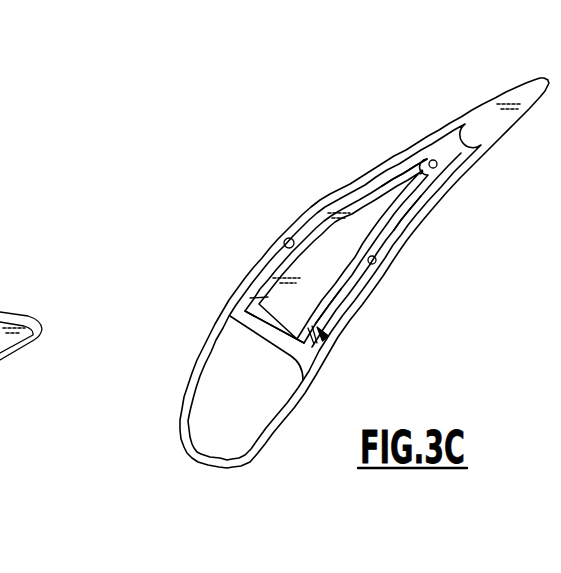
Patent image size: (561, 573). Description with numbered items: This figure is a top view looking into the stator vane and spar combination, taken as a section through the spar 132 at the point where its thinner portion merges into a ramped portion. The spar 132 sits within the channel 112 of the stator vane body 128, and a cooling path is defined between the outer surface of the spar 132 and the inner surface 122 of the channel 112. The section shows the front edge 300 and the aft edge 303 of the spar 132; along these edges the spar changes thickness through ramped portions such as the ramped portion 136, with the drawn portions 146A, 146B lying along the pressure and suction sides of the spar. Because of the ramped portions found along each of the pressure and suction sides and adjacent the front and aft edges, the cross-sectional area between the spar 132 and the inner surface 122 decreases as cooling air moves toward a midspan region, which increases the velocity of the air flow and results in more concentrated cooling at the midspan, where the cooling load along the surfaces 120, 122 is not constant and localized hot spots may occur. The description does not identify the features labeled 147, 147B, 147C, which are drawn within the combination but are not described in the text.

The stator vane body 128 is at (179, 393).
The insert / liner 147 is at (283, 270).
The insert portion 147B is at (343, 213).
The insert portion 147C is at (387, 187).
The aft edge 303 is at (455, 150).
The cooling passage 146B is at (397, 218).
The cooling passage 146A is at (327, 308).
The surface 120 is at (376, 259).
The inner surface 122 is at (285, 238).
The ramped portion 136 is at (280, 327).
The channel 112 is at (242, 293).
The front edge 300 is at (281, 326).
The spar 132 is at (325, 339).